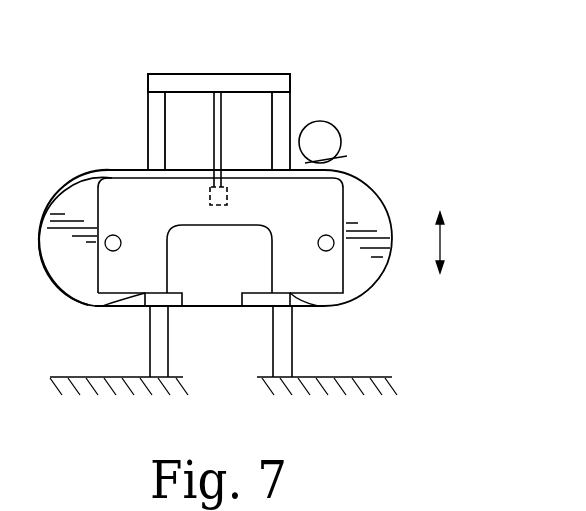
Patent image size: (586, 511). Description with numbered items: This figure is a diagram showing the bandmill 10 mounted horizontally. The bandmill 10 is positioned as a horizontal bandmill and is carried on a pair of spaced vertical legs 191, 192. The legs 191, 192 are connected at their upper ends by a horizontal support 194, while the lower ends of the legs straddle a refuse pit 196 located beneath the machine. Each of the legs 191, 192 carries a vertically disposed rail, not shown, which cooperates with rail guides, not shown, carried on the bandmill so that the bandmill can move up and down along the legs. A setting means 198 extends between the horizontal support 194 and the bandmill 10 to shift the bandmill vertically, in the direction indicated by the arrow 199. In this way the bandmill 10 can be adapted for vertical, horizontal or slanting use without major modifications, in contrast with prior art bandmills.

The bandmill 10 is at (373, 160).
The vertical leg 191 is at (148, 128).
The vertical leg 192 is at (292, 350).
The horizontal support 194 is at (194, 73).
The refuse pit 196 is at (215, 392).
The setting means 198 is at (213, 118).
The arrow 199 is at (443, 243).